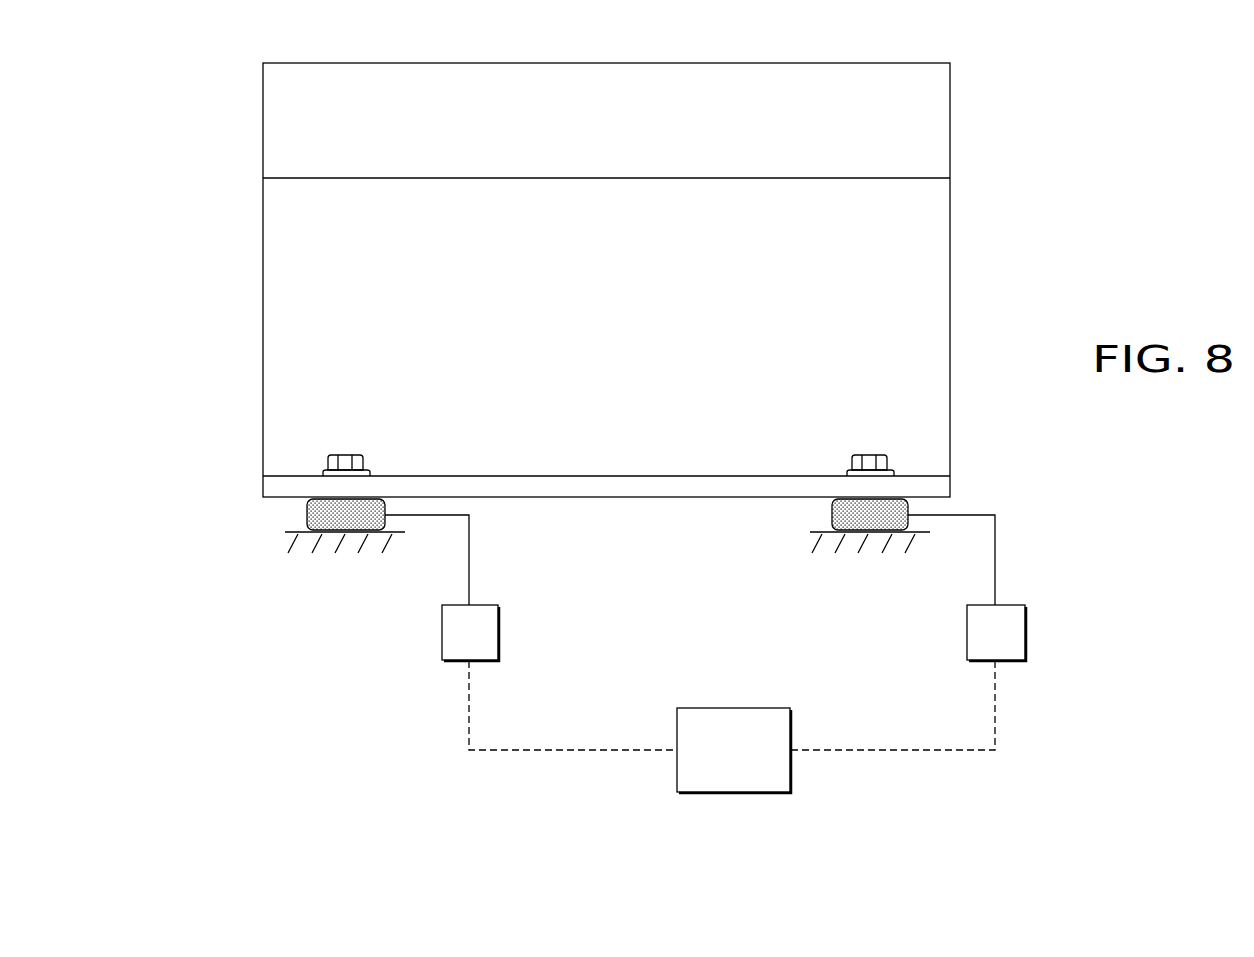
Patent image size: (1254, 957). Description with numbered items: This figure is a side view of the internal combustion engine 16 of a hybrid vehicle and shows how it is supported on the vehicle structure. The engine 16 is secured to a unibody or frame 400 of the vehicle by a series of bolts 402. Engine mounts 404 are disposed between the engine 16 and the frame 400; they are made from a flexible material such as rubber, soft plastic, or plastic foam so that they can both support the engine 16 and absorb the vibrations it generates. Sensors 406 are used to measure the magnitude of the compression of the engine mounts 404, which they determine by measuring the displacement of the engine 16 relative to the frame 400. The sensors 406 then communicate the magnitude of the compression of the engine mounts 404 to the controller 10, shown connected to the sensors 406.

The internal combustion engine 16 is at (952, 288).
The bolts 402 is at (345, 455).
The engine mounts 404 is at (307, 515).
The frame 400 is at (306, 526).
The sensors 406 is at (483, 605).
The controller 10 is at (737, 708).